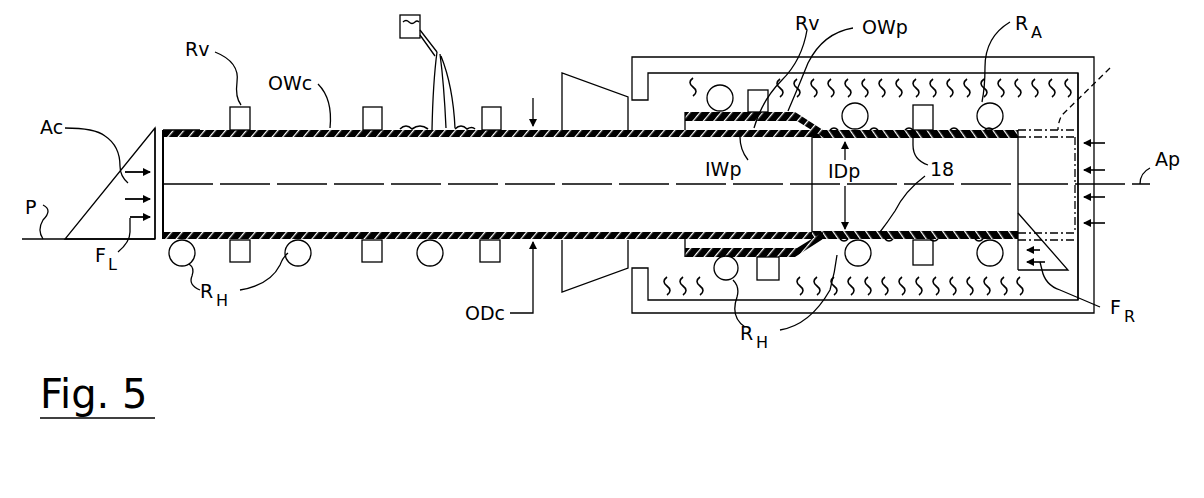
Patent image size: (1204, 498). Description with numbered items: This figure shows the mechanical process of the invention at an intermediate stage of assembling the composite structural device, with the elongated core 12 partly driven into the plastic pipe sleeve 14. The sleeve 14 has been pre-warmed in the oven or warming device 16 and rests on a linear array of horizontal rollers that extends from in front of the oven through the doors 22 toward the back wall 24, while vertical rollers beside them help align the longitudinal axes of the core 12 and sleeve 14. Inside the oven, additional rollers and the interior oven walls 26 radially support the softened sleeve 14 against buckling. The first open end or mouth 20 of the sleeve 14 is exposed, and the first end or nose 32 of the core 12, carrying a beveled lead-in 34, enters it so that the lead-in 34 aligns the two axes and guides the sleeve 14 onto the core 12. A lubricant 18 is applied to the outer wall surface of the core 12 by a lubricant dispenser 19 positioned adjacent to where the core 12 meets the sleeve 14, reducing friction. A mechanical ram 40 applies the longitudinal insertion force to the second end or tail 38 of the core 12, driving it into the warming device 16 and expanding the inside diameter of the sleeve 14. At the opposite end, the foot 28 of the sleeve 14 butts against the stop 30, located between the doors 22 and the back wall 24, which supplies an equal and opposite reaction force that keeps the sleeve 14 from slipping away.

The core 12 is at (225, 128).
The plastic pipe sleeve 14 is at (957, 130).
The warming device 16 is at (632, 306).
The lubricant 18 is at (420, 128).
The lubricant dispenser 19 is at (400, 30).
The mouth 20 is at (680, 125).
The doors 22 is at (577, 73).
The back wall 24 is at (1078, 116).
The interior oven walls 26 is at (741, 82).
The foot 28 is at (1018, 128).
The stop 30 is at (1063, 258).
The nose 32 is at (768, 90).
The lead-in 34 is at (165, 128).
The tail 38 is at (182, 128).
The mechanical ram 40 is at (100, 189).